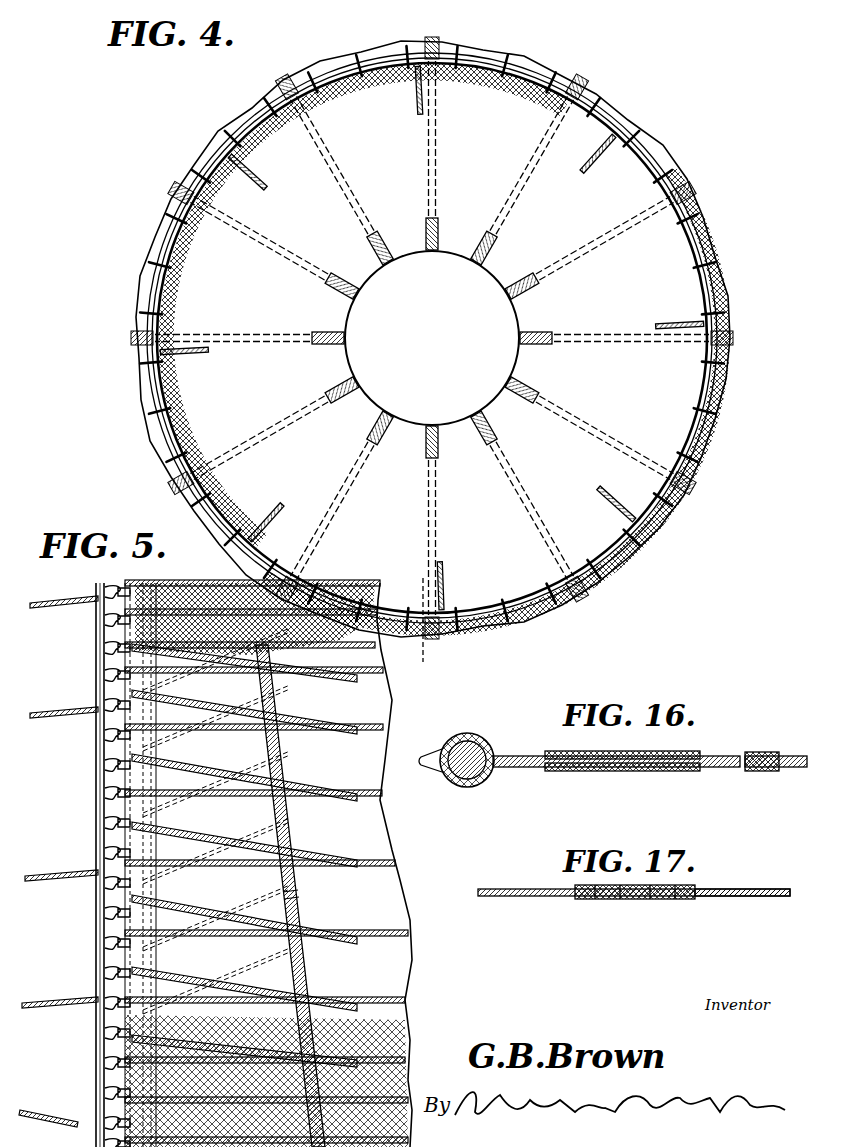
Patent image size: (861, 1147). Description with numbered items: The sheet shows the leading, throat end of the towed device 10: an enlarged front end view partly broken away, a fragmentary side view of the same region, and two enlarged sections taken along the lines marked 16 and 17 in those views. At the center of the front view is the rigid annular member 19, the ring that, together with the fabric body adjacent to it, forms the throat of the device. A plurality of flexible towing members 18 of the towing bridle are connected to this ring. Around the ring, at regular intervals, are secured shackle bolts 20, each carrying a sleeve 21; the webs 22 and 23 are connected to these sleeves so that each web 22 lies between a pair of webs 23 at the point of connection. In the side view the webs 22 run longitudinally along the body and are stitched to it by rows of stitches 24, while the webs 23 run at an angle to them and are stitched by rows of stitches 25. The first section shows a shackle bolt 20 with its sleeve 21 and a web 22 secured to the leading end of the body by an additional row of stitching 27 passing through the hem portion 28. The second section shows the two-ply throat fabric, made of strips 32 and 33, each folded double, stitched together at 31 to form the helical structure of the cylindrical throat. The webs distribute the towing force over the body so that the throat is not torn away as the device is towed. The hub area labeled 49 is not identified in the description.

In FIG. 4, the device 10 is at (246, 97).
In FIG. 5, the device 10 is at (424, 966).
In FIG. 4, the float 16 is at (416, 590).
In FIG. 5, the line 17 is at (284, 952).
In FIG. 4, the flexible towing members 18 is at (413, 107).
In FIG. 5, the flexible towing members 18 is at (42, 706).
In FIG. 4, the rigid annular member 19 is at (340, 70).
In FIG. 5, the rigid annular member 19 is at (95, 742).
In FIG. 4, the shackle bolts 20 is at (500, 56).
In FIG. 5, the shackle bolts 20 is at (108, 820).
In FIG. 16, the shackle bolts 20 is at (426, 753).
In FIG. 16, the sleeves 21 is at (467, 742).
In FIG. 4, the webs 22 is at (590, 86).
In FIG. 5, the webs 22 is at (372, 798).
In FIG. 16, the webs 22 is at (518, 757).
In FIG. 5, the webs 23 is at (175, 715).
In FIG. 5, the rows of stitches 24 is at (385, 930).
In FIG. 5, the rows of stitches 25 is at (180, 797).
In FIG. 16, the row of stitching 27 is at (566, 753).
In FIG. 16, the hem portion 28 is at (645, 771).
In FIG. 5, the stitching 31 is at (300, 894).
In FIG. 17, the stitching 31 is at (688, 901).
In FIG. 16, the strip 32 is at (736, 755).
In FIG. 17, the strip 32 is at (733, 888).
In FIG. 17, the strip 33 is at (513, 888).
In FIG. 4, the hub 49 is at (433, 338).